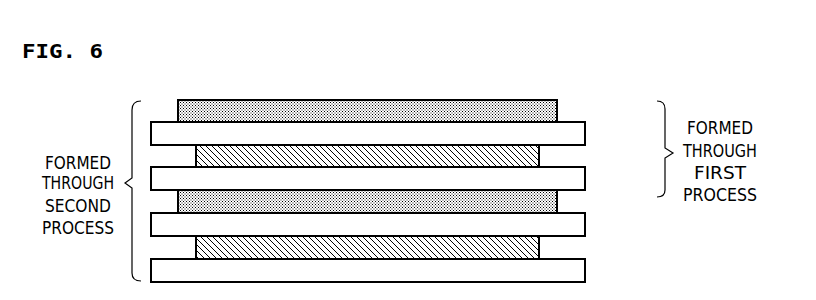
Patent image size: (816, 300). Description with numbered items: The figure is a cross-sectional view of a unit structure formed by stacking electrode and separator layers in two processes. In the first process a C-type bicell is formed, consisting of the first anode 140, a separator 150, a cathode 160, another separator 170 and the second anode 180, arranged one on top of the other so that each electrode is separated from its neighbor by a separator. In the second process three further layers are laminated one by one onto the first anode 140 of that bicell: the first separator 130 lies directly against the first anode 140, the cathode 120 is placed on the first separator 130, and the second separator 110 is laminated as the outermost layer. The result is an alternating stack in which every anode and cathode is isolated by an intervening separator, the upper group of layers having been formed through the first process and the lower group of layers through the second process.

The second separator 110 is at (580, 269).
The cathode 120 is at (539, 246).
The first separator 130 is at (580, 223).
The first anode 140 is at (557, 200).
The separator 150 is at (580, 177).
The cathode 160 is at (539, 154).
The separator 170 is at (580, 133).
The second anode 180 is at (557, 110).